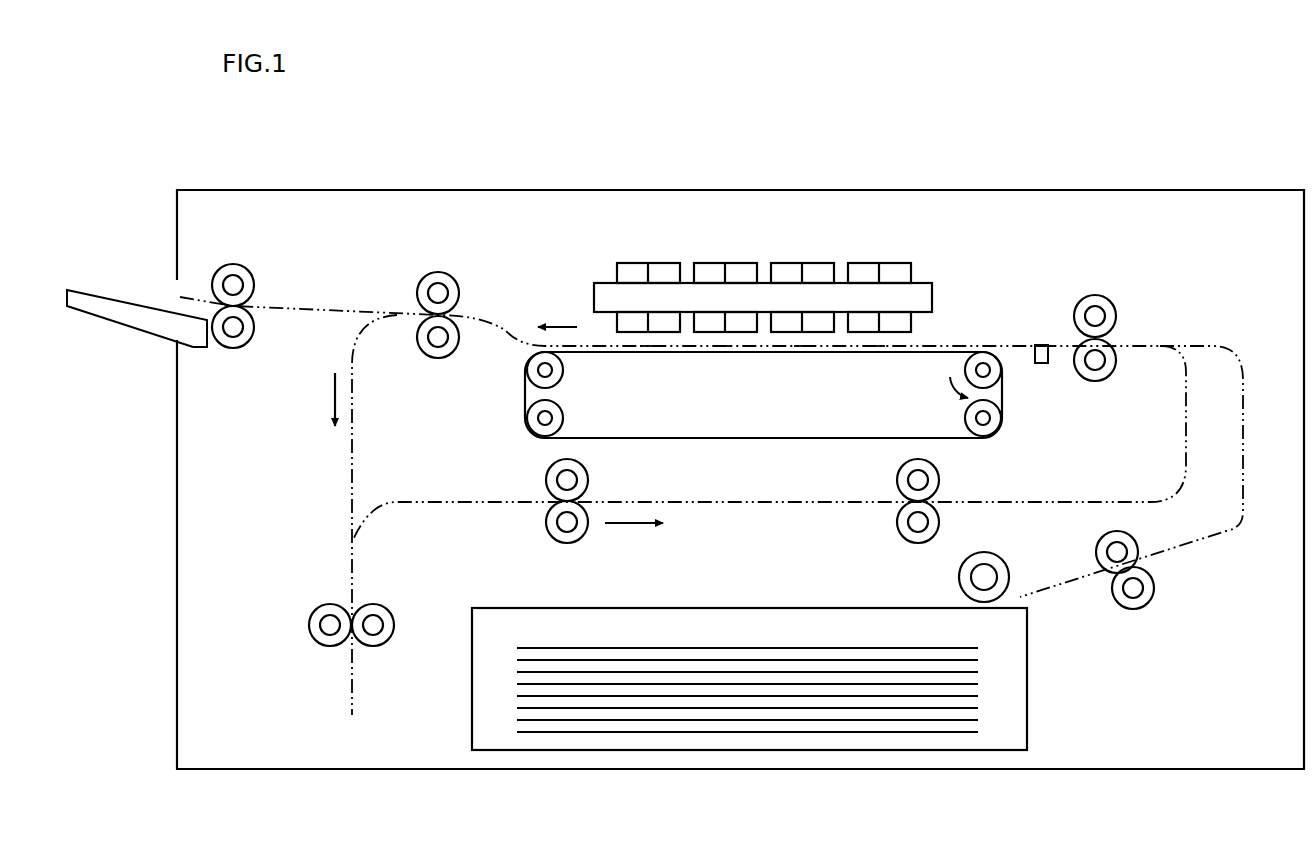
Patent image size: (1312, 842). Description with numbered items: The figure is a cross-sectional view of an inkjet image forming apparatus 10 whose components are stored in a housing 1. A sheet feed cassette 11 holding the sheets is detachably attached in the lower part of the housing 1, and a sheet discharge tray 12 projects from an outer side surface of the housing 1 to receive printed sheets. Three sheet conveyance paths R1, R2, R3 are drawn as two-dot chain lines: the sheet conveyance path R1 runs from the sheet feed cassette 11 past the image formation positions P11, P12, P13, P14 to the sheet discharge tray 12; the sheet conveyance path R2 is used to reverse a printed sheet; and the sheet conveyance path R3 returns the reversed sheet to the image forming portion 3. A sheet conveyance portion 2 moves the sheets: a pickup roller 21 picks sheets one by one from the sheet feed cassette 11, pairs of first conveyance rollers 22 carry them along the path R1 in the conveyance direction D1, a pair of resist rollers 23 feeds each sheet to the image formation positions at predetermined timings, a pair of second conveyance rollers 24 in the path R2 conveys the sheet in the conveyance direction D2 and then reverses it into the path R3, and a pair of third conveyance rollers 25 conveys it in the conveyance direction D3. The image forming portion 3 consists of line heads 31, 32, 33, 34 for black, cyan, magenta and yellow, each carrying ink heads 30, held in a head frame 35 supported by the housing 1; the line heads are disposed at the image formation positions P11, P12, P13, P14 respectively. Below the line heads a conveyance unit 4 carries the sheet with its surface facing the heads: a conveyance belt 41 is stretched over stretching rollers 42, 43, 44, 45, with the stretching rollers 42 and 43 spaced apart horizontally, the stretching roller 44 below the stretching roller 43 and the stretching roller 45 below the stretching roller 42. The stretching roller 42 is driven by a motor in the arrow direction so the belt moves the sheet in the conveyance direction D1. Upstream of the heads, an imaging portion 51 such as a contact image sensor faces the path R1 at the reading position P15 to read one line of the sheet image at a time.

The housing 1 is at (1065, 190).
The sheet conveyance portion 2 is at (1222, 668).
The image forming portion 3 is at (955, 252).
The conveyance unit 4 is at (514, 394).
The image forming apparatus 10 is at (140, 148).
The sheet feed cassette 11 is at (472, 676).
The sheet discharge tray 12 is at (103, 292).
The pickup roller 21 is at (959, 577).
The pair of first conveyance rollers 22 is at (217, 266).
The pair of resist rollers 23 is at (1081, 294).
The pair of second conveyance rollers 24 is at (308, 618).
The pair of third conveyance rollers 25 is at (545, 521).
The ink head 30 is at (632, 263).
The line head 31 is at (885, 250).
The line head 32 is at (808, 250).
The line head 33 is at (732, 250).
The line head 34 is at (655, 250).
The head frame 35 is at (918, 283).
The conveyance belt 41 is at (786, 438).
The stretching roller 42 is at (965, 371).
The stretching roller 43 is at (560, 382).
The stretching roller 44 is at (563, 418).
The stretching roller 45 is at (965, 417).
The imaging portion 51 is at (1041, 364).
The sheet conveyance path R1 is at (1220, 541).
The sheet conveyance path R2 is at (352, 462).
The sheet conveyance path R3 is at (728, 505).
The conveyance direction D1 is at (559, 326).
The conveyance direction D2 is at (334, 395).
The conveyance direction D3 is at (634, 545).
The image formation position P11 is at (875, 340).
The image formation position P12 is at (799, 340).
The image formation position P13 is at (722, 340).
The image formation position P14 is at (645, 340).
The reading position P15 is at (1043, 334).